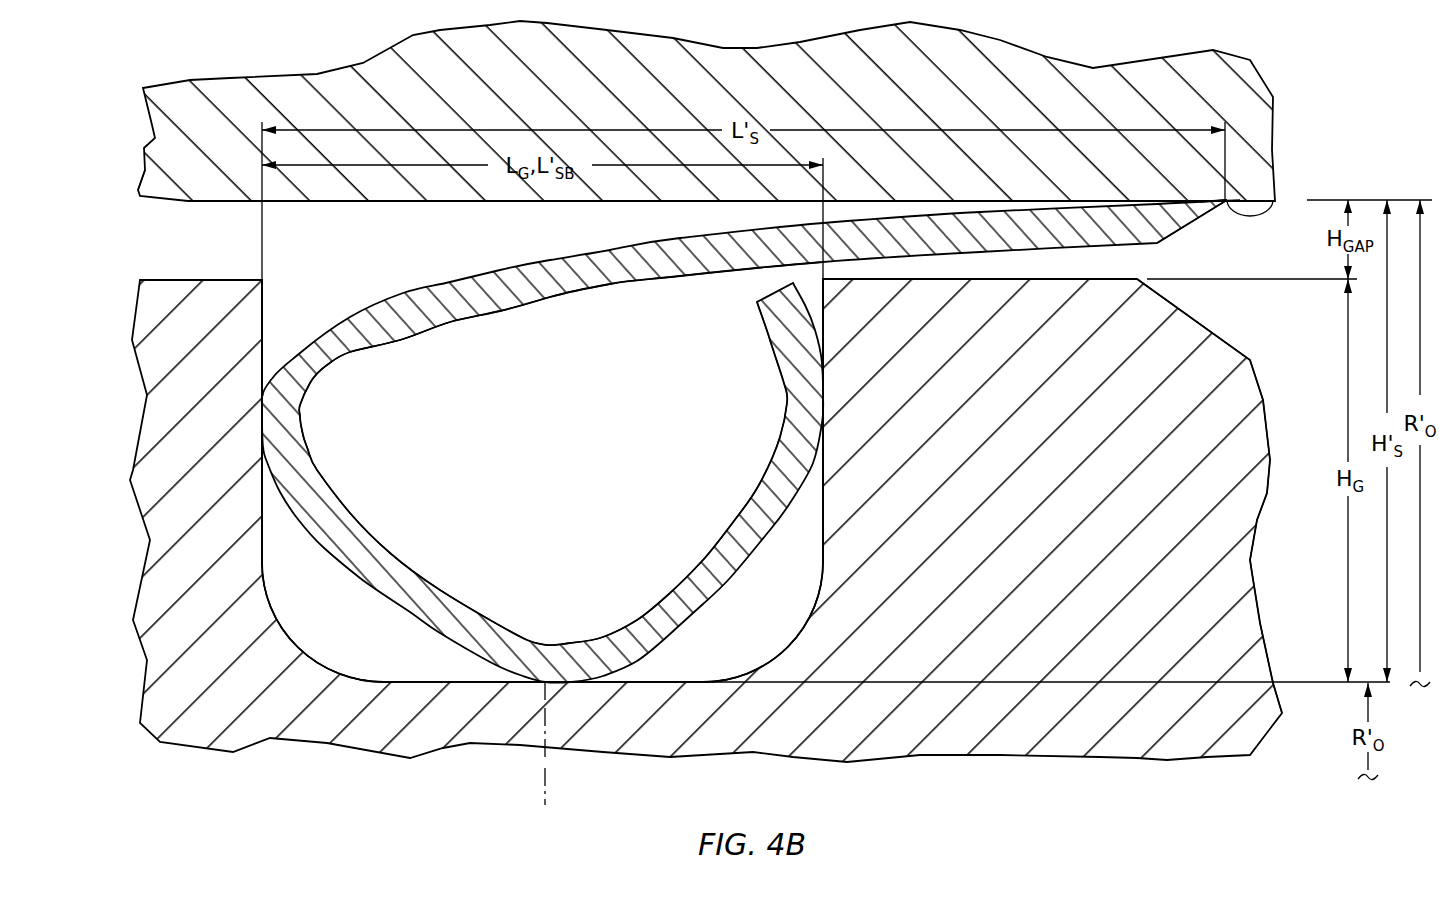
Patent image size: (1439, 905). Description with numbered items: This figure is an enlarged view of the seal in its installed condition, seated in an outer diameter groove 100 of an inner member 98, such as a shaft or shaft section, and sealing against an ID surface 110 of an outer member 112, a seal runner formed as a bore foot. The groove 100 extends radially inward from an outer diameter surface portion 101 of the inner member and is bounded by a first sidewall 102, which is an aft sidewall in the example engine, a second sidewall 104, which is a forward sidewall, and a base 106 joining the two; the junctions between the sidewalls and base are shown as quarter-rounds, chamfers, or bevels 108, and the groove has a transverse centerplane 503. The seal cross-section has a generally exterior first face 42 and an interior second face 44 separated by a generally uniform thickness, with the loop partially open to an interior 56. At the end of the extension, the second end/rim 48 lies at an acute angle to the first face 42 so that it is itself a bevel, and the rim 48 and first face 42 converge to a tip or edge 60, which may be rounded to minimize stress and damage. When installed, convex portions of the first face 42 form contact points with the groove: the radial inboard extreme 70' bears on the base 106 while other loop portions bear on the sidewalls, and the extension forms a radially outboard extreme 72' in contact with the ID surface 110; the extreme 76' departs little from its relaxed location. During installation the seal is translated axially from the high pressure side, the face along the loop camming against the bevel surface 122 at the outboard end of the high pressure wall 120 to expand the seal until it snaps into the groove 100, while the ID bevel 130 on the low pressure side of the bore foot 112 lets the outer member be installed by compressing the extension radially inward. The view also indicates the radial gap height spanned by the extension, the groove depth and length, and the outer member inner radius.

The first face 42 is at (400, 297).
The second face 44 is at (416, 336).
The second end/rim 48 is at (1177, 231).
The interior 56 is at (561, 476).
The tip or edge 60 is at (1245, 196).
The radial inboard extreme 70' is at (543, 703).
The radially outboard extreme 72' is at (1258, 161).
The loop extreme 76' is at (1298, 193).
The inner member 98 is at (851, 735).
The groove 100 is at (414, 657).
The outer diameter surface portion 101 is at (162, 280).
The first sidewall 102 is at (823, 503).
The second sidewall 104 is at (262, 533).
The base 106 is at (678, 680).
The bevels 108 is at (289, 626).
The ID surface 110 is at (392, 202).
The outer member 112 is at (562, 86).
The high pressure wall 120 is at (1195, 608).
The bevel surface 122 is at (1190, 317).
The ID bevel 130 is at (175, 201).
The transverse centerplane 503 is at (548, 800).